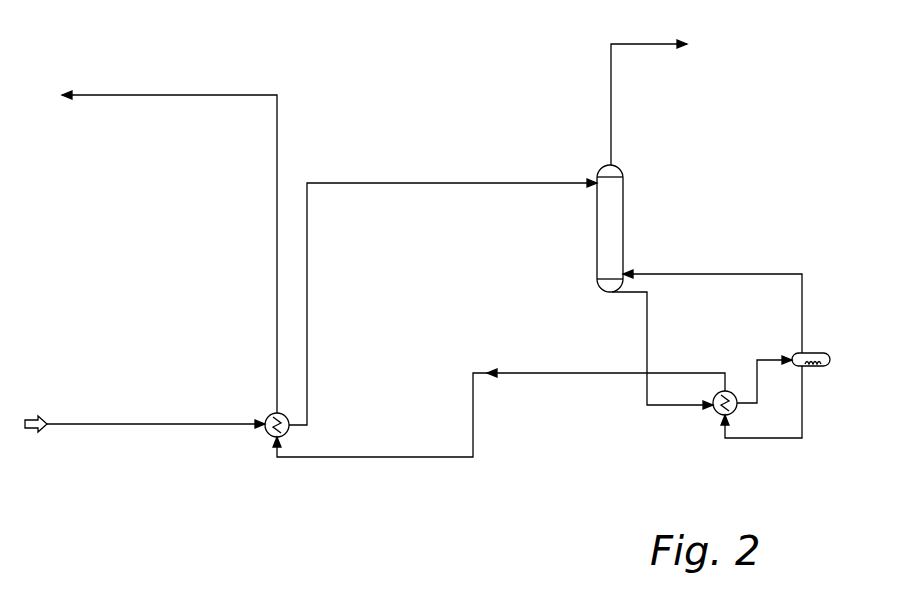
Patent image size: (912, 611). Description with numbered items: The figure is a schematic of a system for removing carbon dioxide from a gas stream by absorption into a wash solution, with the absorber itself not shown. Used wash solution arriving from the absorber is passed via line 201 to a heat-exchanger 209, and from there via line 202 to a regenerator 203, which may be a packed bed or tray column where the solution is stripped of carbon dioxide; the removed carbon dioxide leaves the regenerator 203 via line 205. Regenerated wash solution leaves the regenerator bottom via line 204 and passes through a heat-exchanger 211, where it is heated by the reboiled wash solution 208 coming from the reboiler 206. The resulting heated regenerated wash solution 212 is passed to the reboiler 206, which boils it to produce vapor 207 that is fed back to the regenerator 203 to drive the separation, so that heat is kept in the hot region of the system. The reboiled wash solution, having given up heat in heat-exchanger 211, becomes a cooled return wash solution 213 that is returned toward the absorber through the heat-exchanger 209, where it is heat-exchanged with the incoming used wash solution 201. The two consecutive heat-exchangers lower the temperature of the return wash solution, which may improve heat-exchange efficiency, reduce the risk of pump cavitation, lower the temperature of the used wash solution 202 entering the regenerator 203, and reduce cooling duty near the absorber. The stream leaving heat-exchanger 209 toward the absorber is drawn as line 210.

The line 201 is at (163, 426).
The line 202 is at (307, 322).
The regenerator 203 is at (615, 218).
The line 204 is at (647, 318).
The line 205 is at (611, 106).
The reboiler 206 is at (832, 355).
The vapor 207 is at (802, 298).
The wash solution 208 is at (802, 397).
The heat-exchanger 209 is at (265, 440).
The product stream 210 is at (277, 250).
The heat-exchanger 211 is at (712, 416).
The line 212 is at (742, 395).
The return wash solution 213 is at (540, 375).